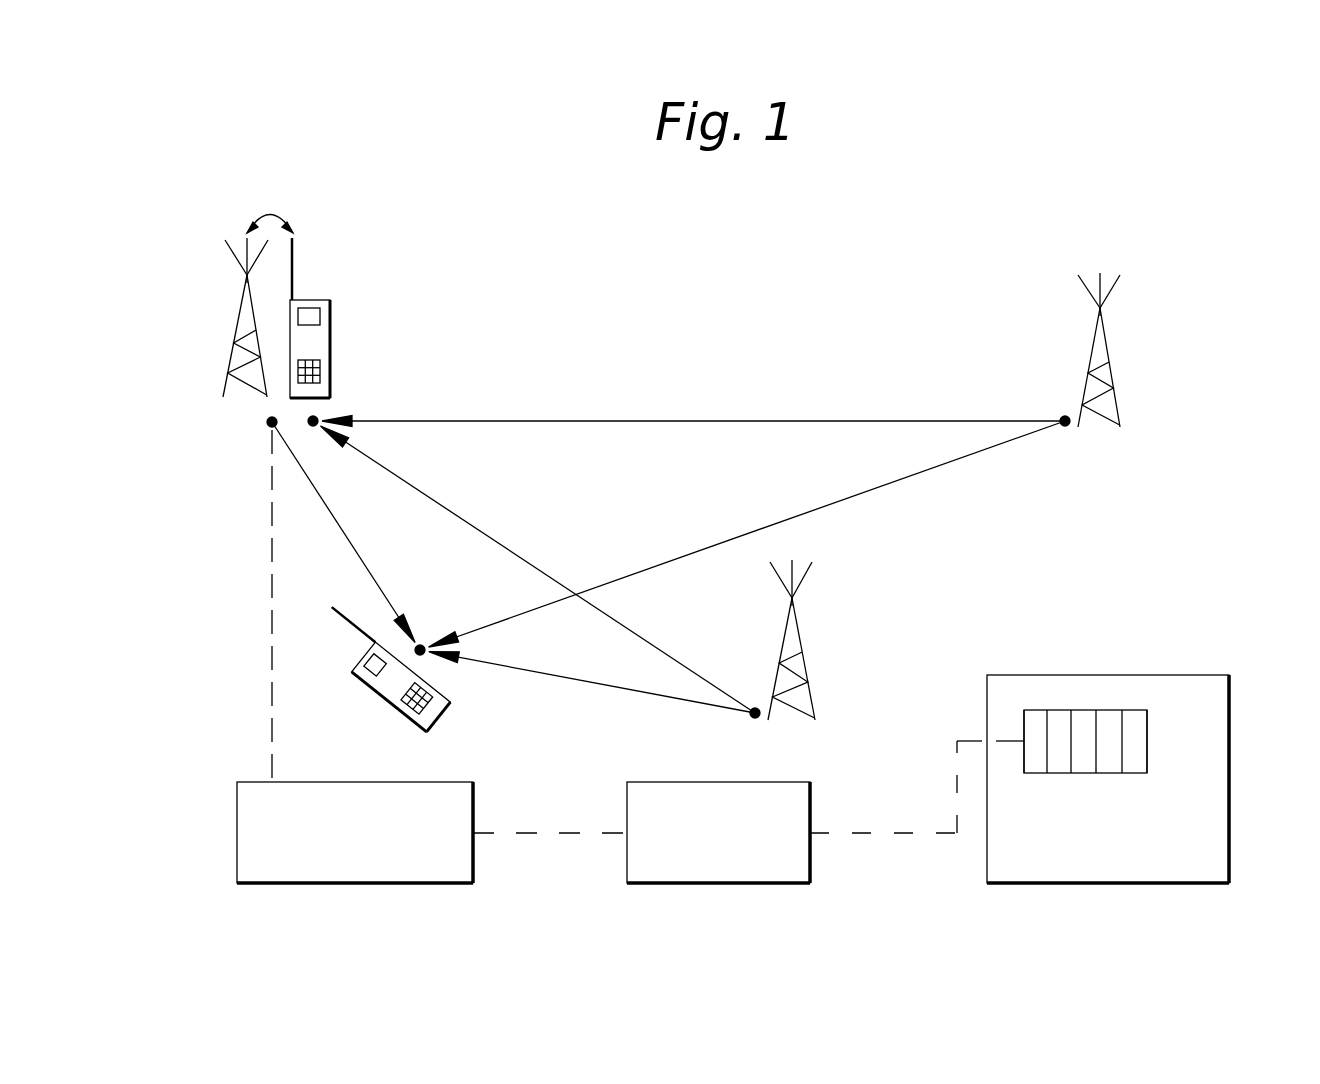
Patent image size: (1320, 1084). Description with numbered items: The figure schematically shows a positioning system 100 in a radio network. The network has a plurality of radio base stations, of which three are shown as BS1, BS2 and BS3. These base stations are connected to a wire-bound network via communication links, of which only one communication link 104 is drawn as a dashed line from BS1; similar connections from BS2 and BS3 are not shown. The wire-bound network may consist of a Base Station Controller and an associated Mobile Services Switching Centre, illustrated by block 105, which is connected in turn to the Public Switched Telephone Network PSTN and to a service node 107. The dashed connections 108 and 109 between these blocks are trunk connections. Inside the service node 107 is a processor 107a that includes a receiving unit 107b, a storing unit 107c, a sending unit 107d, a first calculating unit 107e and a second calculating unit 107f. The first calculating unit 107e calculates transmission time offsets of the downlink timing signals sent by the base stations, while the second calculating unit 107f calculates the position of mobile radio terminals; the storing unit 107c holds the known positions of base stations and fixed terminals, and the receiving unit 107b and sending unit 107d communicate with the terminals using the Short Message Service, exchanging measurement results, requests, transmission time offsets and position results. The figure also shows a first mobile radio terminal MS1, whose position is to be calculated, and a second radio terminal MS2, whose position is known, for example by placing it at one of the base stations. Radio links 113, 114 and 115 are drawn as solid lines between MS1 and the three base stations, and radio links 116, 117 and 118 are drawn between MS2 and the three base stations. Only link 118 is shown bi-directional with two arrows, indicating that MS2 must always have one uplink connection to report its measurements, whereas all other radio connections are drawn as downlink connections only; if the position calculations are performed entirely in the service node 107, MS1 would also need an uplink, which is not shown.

The positioning system 100 is at (832, 290).
The communication link 104 is at (270, 590).
The block comprising Base Station Controller and Mobile Services Switching Centre 105 is at (355, 884).
The service node 107 is at (1105, 884).
The processor 107a is at (1147, 742).
The receiving unit 107b is at (1035, 710).
The storing unit 107c is at (1059, 710).
The sending unit 107d is at (1109, 710).
The first calculating unit 107e is at (1084, 710).
The second calculating unit 107f is at (1134, 710).
The trunk connection 108 is at (568, 835).
The trunk connection 109 is at (905, 835).
The radio link 113 is at (362, 557).
The radio link 114 is at (790, 518).
The radio link 115 is at (575, 679).
The radio link 116 is at (486, 536).
The radio link 117 is at (675, 420).
The radio link 118 is at (270, 212).
The radio base station BS1 is at (228, 358).
The radio base station BS2 is at (812, 697).
The radio base station BS3 is at (1118, 405).
The first mobile radio terminal MS1 is at (386, 703).
The second radio terminal MS2 is at (331, 356).
The Public Switched Telephone Network PSTN is at (718, 832).